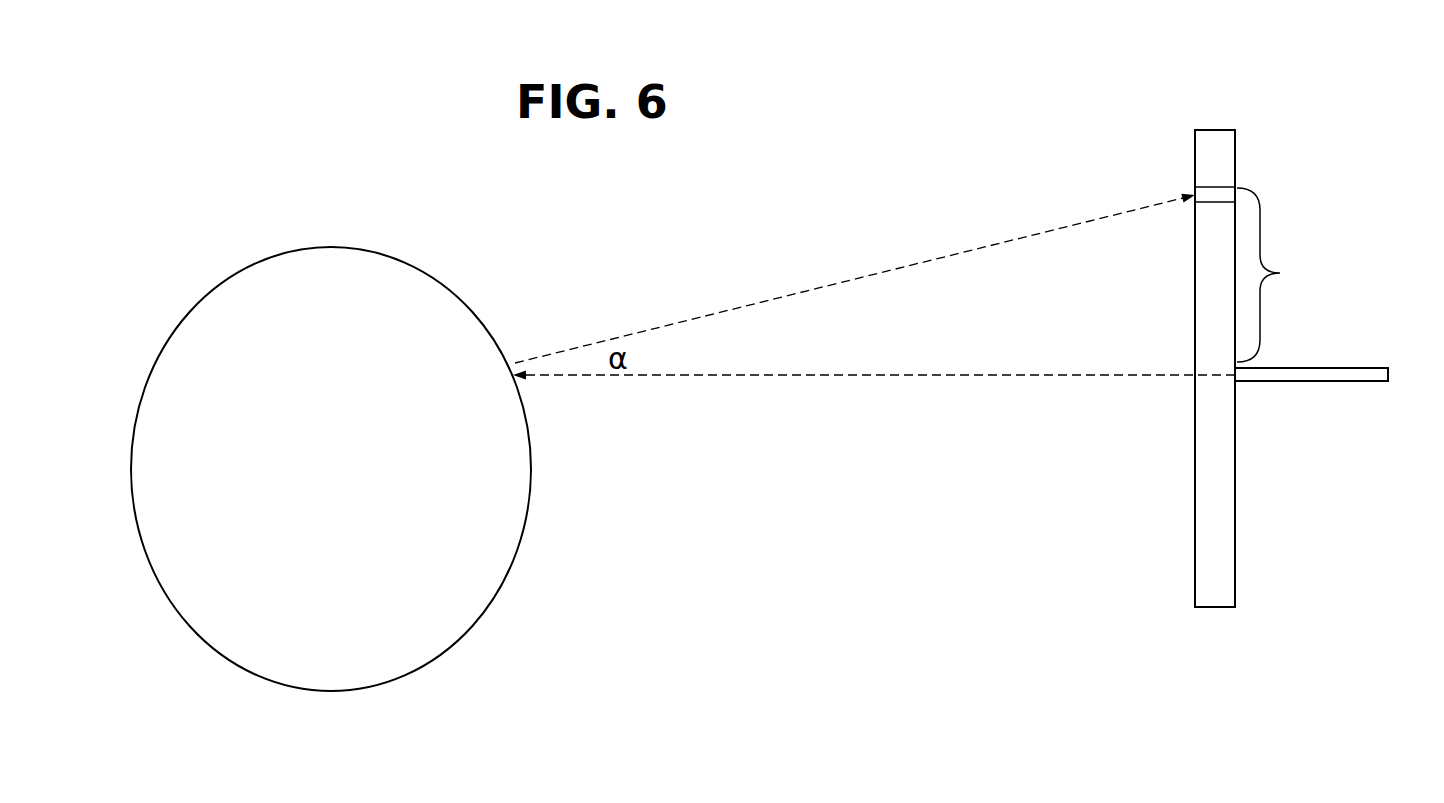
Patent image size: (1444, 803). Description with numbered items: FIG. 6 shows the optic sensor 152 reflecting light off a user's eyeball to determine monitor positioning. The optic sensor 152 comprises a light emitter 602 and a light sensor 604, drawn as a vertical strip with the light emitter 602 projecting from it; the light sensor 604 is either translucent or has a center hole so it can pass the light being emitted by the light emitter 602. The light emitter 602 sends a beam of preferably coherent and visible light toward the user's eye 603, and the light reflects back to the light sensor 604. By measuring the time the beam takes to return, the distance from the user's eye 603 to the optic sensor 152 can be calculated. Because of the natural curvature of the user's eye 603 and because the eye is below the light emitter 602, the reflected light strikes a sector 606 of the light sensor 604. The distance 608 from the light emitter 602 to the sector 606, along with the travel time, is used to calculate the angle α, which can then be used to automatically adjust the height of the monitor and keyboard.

The optic sensor 152 is at (1319, 373).
The light emitter 602 is at (1340, 393).
The user's eye 603 is at (346, 488).
The light sensor 604 is at (1250, 554).
The sector 606 is at (1210, 196).
The distance 608 is at (1284, 275).